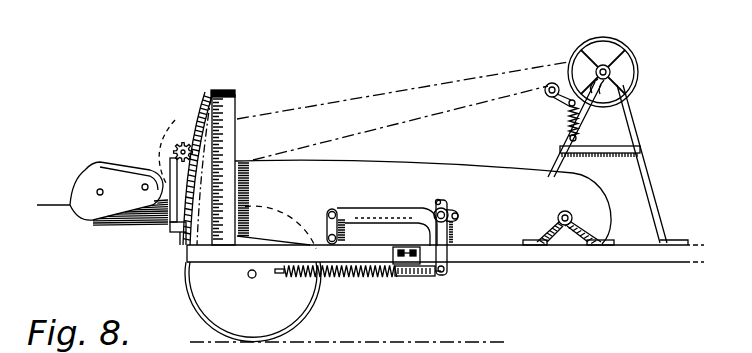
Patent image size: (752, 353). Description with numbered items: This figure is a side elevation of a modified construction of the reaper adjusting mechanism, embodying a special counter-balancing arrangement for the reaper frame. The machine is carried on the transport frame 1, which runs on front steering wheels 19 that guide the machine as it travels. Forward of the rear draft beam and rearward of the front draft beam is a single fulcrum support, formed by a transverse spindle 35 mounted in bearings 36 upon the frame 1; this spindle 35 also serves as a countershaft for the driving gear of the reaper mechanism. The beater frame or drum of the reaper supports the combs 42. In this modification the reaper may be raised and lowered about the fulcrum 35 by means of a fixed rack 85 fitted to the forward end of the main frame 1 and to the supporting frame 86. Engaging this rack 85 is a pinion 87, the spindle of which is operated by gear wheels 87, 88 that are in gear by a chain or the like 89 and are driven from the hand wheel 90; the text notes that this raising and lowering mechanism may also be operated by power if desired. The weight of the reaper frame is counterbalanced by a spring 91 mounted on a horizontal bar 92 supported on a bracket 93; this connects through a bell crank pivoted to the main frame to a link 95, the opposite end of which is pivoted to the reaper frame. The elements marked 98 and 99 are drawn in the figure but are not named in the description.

The transport frame 1 is at (200, 258).
The front steering wheels 19 is at (293, 323).
The transverse spindle 35 is at (566, 226).
The bearings 36 is at (547, 245).
The combs 42 is at (57, 207).
The fixed rack 85 is at (203, 102).
The supporting frame 86 is at (224, 144).
The pinion 87 is at (188, 131).
The gear wheel 88 is at (622, 48).
The chain 89 is at (387, 91).
The hand wheel 90 is at (638, 84).
The spring 91 is at (361, 278).
The horizontal bar 92 is at (417, 266).
The bracket 93 is at (396, 280).
The link 95 is at (326, 219).
The shoe plate 98 is at (83, 180).
The lever link 99 is at (448, 237).